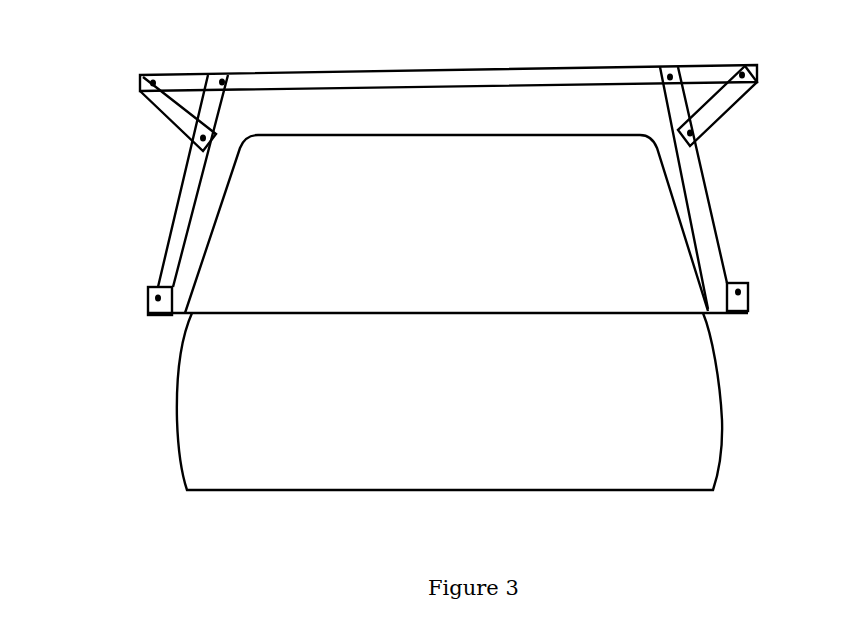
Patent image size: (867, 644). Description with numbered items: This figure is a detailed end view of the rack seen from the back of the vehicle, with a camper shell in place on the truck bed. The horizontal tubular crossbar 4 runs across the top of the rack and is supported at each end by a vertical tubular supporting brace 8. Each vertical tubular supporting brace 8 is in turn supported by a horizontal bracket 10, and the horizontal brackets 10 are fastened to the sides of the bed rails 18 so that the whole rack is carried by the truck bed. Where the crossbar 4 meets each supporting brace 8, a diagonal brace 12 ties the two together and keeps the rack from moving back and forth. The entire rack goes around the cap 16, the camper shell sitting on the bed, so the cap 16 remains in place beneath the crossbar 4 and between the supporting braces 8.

The horizontal tubular crossbar 4 is at (437, 80).
The vertical tubular supporting brace 8 is at (707, 202).
The horizontal bracket 10 is at (740, 300).
The brace 12 is at (177, 118).
The cap 16 is at (315, 208).
The bed rail 18 is at (193, 315).